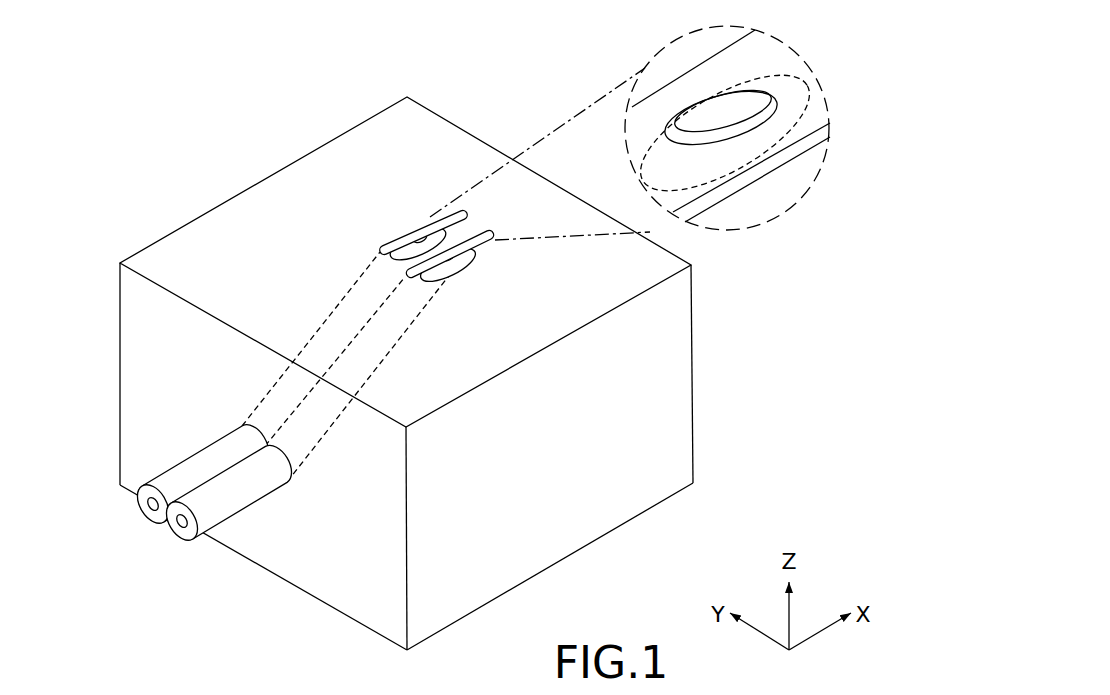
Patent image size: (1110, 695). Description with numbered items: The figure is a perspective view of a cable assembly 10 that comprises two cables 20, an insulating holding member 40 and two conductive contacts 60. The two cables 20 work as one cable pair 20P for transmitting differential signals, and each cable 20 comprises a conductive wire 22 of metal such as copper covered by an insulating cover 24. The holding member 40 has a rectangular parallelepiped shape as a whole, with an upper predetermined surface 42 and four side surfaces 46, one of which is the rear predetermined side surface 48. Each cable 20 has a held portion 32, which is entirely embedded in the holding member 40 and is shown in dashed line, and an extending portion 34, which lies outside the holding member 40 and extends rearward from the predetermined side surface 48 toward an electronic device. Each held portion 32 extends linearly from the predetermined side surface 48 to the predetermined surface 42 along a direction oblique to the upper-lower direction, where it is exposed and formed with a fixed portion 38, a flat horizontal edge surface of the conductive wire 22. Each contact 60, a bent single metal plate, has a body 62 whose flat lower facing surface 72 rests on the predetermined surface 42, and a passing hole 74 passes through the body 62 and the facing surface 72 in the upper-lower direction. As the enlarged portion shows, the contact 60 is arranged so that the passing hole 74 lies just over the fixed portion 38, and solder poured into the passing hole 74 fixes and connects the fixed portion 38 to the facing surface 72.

The cable assembly 10 is at (247, 61).
The cable 20 is at (157, 528).
The cable pair 20P is at (145, 604).
The conductive wire 22 is at (148, 513).
The cover 24 is at (141, 503).
The held portion 32 is at (309, 392).
The extending portion 34 is at (215, 468).
The fixed portion 38 is at (640, 150).
The holding member 40 is at (117, 260).
The predetermined surface 42 is at (225, 225).
The side surface 46 is at (550, 528).
The predetermined side surface 48 is at (370, 593).
The contact 60 is at (490, 228).
The body 62 is at (818, 117).
The facing surface 72 is at (747, 187).
The passing hole 74 is at (722, 128).